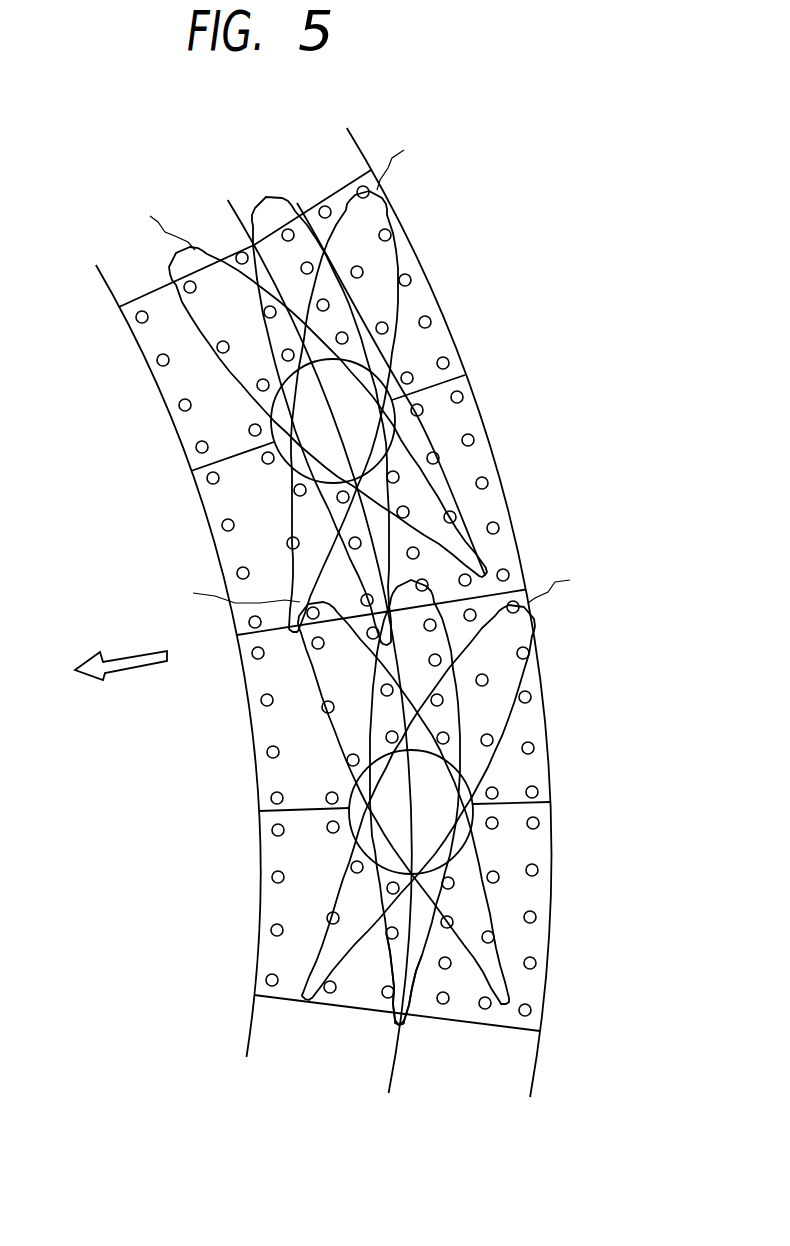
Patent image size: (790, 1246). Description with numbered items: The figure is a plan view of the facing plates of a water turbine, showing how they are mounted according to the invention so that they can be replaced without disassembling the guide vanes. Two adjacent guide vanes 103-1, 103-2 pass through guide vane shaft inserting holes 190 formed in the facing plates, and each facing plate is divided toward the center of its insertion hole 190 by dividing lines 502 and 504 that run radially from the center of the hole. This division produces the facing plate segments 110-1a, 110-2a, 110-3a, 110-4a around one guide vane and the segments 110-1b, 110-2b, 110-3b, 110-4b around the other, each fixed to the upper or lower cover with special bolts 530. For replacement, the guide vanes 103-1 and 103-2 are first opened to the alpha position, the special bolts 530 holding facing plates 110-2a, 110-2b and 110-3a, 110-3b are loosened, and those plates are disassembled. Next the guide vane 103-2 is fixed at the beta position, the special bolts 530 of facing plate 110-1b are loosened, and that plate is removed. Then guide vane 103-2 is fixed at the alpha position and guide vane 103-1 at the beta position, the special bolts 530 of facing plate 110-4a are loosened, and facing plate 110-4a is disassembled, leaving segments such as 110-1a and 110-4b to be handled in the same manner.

The guide vane 103-1 is at (311, 385).
The guide vane 103-2 is at (407, 794).
The facing plate 110-1a is at (408, 285).
The facing plate 110-2a is at (511, 502).
The facing plate 110-3a is at (163, 358).
The facing plate 110-4a is at (216, 543).
The facing plate 110-1b is at (532, 691).
The facing plate 110-2b is at (537, 924).
The facing plate 110-3b is at (243, 719).
The facing plate 110-4b is at (252, 917).
The guide vane shaft inserting hole 190 is at (445, 616).
The special bolt 530 is at (533, 472).
The dividing line 502 is at (560, 779).
The dividing line 504 is at (363, 1005).